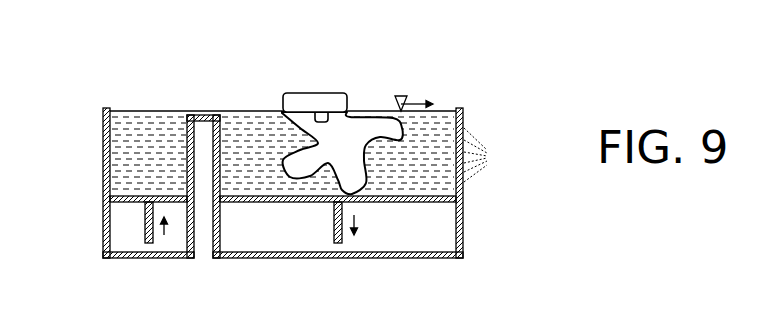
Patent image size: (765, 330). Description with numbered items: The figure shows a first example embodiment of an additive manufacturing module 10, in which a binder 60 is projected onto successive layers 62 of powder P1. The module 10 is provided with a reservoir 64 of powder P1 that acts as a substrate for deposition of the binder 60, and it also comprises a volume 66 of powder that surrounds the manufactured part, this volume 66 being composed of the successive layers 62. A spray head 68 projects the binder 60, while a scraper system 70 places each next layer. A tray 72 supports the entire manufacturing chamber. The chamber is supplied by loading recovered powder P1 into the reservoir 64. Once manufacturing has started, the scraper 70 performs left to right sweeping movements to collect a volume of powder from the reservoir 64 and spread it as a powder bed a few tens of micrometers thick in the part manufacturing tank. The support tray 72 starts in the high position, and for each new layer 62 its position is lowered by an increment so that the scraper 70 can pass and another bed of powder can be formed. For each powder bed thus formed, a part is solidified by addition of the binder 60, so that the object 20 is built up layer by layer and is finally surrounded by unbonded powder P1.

The module 10 is at (110, 76).
The reservoir 64 is at (145, 123).
The volume 66 is at (242, 125).
The binder 60 is at (272, 108).
The spray head 68 is at (310, 98).
The object 20 is at (373, 130).
The scraper system 70 is at (400, 95).
The layers 62 is at (494, 155).
The tray 72 is at (334, 224).
The powder P1 is at (247, 185).